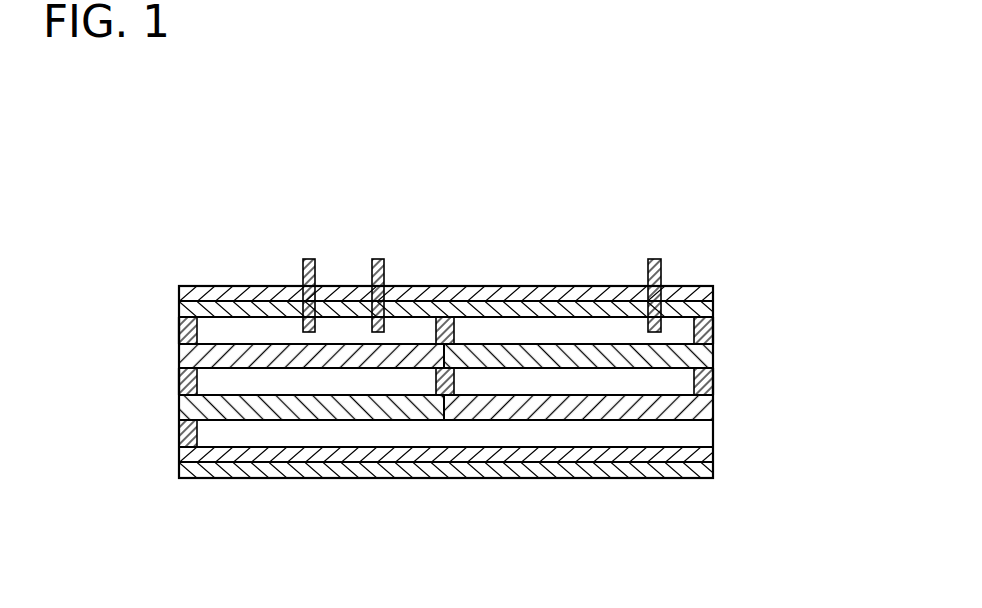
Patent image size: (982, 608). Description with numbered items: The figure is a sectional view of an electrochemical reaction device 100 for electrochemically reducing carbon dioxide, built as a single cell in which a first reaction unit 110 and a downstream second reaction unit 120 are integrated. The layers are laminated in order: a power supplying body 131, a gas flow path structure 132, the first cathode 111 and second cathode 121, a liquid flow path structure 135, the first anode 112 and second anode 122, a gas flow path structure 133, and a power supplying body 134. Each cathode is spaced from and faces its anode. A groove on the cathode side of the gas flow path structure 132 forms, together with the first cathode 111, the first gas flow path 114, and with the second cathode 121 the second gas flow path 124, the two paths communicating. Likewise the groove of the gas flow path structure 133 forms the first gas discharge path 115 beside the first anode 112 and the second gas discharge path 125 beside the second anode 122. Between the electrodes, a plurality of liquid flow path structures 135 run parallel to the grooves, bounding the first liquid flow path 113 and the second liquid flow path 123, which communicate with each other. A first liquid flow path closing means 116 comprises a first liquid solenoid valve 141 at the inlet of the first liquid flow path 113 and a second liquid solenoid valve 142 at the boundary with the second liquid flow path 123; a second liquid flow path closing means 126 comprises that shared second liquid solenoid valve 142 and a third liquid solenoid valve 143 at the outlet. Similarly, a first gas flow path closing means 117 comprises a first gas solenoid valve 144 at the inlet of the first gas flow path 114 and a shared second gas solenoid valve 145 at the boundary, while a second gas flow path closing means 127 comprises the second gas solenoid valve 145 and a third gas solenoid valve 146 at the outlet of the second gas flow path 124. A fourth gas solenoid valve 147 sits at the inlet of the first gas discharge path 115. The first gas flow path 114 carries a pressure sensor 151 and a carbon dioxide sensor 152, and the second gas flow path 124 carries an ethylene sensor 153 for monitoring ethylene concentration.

The electrochemical reaction device 100 is at (468, 128).
The first reaction unit 110 is at (244, 193).
The first cathode 111 is at (258, 352).
The first anode 112 is at (238, 412).
The first liquid flow path 113 is at (356, 397).
The first gas flow path 114 is at (351, 318).
The first gas discharge path 115 is at (298, 447).
The first liquid flow path closing means 116 is at (170, 390).
The first gas flow path closing means 117 is at (170, 318).
The second reaction unit 120 is at (566, 176).
The second cathode 121 is at (603, 352).
The second anode 122 is at (640, 412).
The second liquid flow path 123 is at (558, 396).
The second gas flow path 124 is at (536, 318).
The second gas discharge path 125 is at (603, 447).
The second liquid flow path closing means 126 is at (722, 394).
The second gas flow path closing means 127 is at (722, 316).
The power supplying body 131 is at (218, 287).
The gas flow path structure 132 is at (179, 308).
The gas flow path structure 133 is at (179, 452).
The power supplying body 134 is at (227, 478).
The liquid flow path structure 135 is at (658, 387).
The first liquid solenoid valve 141 is at (179, 375).
The second liquid solenoid valve 142 is at (443, 390).
The third liquid solenoid valve 143 is at (713, 378).
The first gas solenoid valve 144 is at (179, 333).
The second gas solenoid valve 145 is at (441, 318).
The third gas solenoid valve 146 is at (713, 333).
The fourth gas solenoid valve 147 is at (179, 432).
The pressure sensor 151 is at (309, 259).
The carbon dioxide sensor 152 is at (378, 259).
The ethylene sensor 153 is at (655, 259).